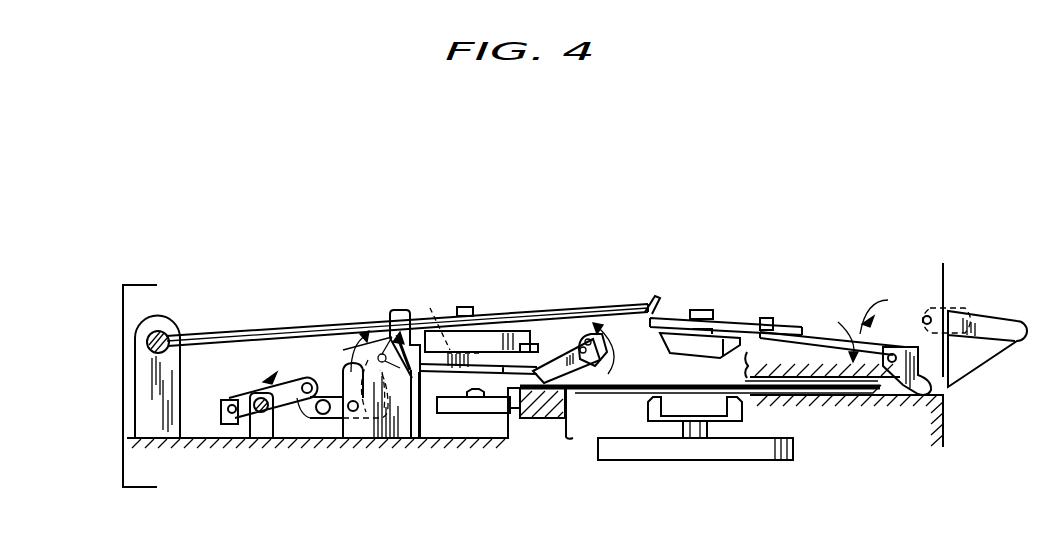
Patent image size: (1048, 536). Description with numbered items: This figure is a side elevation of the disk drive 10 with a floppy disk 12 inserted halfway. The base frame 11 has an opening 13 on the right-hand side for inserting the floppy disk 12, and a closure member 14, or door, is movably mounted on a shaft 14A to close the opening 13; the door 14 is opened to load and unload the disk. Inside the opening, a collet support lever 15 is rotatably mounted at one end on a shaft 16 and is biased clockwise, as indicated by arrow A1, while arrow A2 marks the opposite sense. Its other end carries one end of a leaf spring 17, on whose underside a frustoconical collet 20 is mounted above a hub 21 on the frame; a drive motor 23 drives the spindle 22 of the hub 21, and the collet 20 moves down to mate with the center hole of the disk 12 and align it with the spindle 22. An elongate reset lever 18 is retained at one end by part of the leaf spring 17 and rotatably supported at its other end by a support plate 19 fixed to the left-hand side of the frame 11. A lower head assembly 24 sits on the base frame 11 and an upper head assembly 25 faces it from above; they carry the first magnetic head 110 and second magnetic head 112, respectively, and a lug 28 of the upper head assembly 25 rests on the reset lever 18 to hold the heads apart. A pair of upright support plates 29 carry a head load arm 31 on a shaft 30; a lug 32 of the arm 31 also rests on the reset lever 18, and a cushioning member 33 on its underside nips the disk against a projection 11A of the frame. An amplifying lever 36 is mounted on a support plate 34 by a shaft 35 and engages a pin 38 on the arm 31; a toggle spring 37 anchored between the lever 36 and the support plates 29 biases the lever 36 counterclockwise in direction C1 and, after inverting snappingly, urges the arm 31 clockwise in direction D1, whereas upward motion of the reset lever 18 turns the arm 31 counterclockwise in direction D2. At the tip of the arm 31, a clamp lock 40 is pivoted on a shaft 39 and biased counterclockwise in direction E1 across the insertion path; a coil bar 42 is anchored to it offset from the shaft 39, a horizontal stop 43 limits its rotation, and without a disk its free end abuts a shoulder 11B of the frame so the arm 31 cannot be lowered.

The disk drive 10 is at (460, 194).
The base frame 11 is at (211, 491).
The projection 11A is at (530, 398).
The shoulder 11B is at (583, 428).
The floppy disk 12 is at (857, 393).
The opening 13 is at (938, 391).
The closure member 14 is at (1004, 336).
The shaft 14A is at (931, 318).
The collet support lever 15 is at (923, 395).
The shaft 16 is at (893, 353).
The leaf spring 17 is at (743, 326).
The reset lever 18 is at (643, 302).
The support plate 19 is at (146, 395).
The frustoconical collet 20 is at (682, 346).
The hub 21 is at (656, 421).
The spindle 22 is at (692, 439).
The drive motor 23 is at (765, 460).
The lower head assembly 24 is at (481, 413).
The upper head assembly 25 is at (487, 335).
The lug 28 is at (466, 306).
The upright support plates 29 is at (397, 428).
The shaft 30 is at (383, 354).
The head load arm 31 is at (418, 432).
The lug 32 is at (400, 310).
The cushioning member 33 is at (533, 366).
The support plate 34 is at (261, 428).
The shaft 35 is at (259, 397).
The amplifying lever 36 is at (302, 383).
The toggle spring 37 is at (328, 420).
The pin 38 is at (231, 404).
The shaft 39 is at (583, 340).
The clamp lock 40 is at (574, 366).
The coil bar 42 is at (595, 336).
The stop 43 is at (528, 344).
The first magnetic head 110 is at (468, 390).
The second magnetic head 112 is at (451, 323).
The arrow A1 is at (874, 302).
The arrow A2 is at (843, 326).
The arrow C1 is at (323, 420).
The arrow D1 is at (347, 351).
The arrow D2 is at (375, 389).
The arrow E1 is at (608, 362).